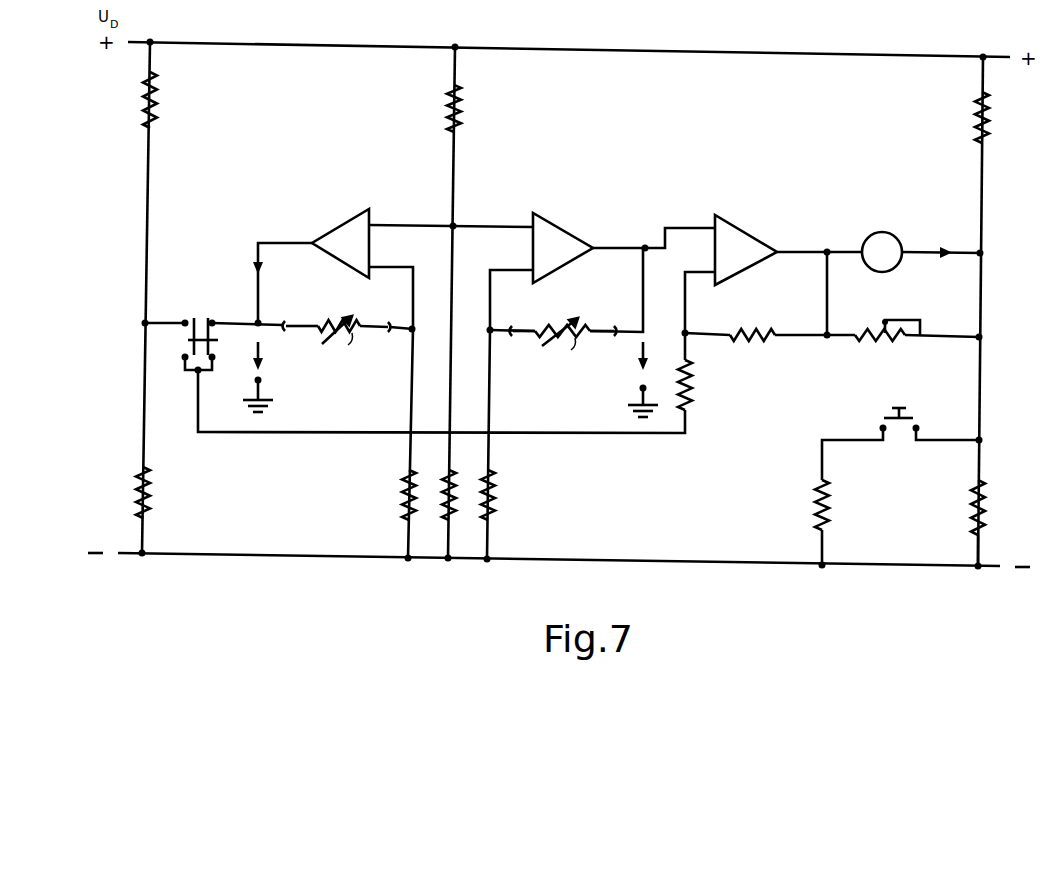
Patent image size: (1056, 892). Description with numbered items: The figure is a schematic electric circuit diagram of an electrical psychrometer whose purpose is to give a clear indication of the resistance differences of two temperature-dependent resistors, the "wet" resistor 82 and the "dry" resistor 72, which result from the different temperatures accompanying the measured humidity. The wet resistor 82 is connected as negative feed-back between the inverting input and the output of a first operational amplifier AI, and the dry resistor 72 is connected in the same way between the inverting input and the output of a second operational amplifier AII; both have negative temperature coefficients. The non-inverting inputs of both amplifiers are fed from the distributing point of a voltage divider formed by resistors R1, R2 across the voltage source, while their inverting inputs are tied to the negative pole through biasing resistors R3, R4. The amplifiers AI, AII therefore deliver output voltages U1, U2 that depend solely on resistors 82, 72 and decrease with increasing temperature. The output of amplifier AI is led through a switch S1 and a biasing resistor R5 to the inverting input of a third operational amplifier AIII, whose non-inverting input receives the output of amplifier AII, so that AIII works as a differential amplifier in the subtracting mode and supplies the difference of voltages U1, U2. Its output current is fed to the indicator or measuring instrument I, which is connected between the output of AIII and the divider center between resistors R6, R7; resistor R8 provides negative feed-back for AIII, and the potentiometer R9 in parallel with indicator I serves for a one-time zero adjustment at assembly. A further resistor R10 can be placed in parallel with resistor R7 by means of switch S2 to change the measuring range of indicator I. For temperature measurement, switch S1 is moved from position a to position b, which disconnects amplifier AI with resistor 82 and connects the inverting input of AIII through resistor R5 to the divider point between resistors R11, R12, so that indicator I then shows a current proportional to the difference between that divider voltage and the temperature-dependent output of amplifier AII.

The voltage divider resistor R1 is at (458, 108).
The voltage divider resistor R2 is at (444, 515).
The biasing resistor R3 is at (403, 515).
The biasing resistor R4 is at (492, 505).
The biasing resistor R5 is at (690, 395).
The divider resistor R6 is at (988, 118).
The divider resistor R7 is at (983, 505).
The negative feed-back resistor R8 is at (752, 338).
The adjustable resistor or potentiometer R9 is at (878, 338).
The further resistor R10 is at (827, 515).
The divider resistor R11 is at (155, 100).
The divider resistor R12 is at (148, 497).
The wet resistor 82 is at (337, 342).
The dry resistor 72 is at (563, 346).
The first operational amplifier AI is at (340, 243).
The second operational amplifier AII is at (563, 248).
The third operational amplifier AIII is at (746, 250).
The indicator or measuring instrument I is at (895, 236).
The switch S1 is at (190, 340).
The switch S2 is at (912, 417).
The switch position a is at (213, 320).
The switch position b is at (184, 320).
The output voltage U1 is at (264, 377).
The output voltage U2 is at (649, 379).